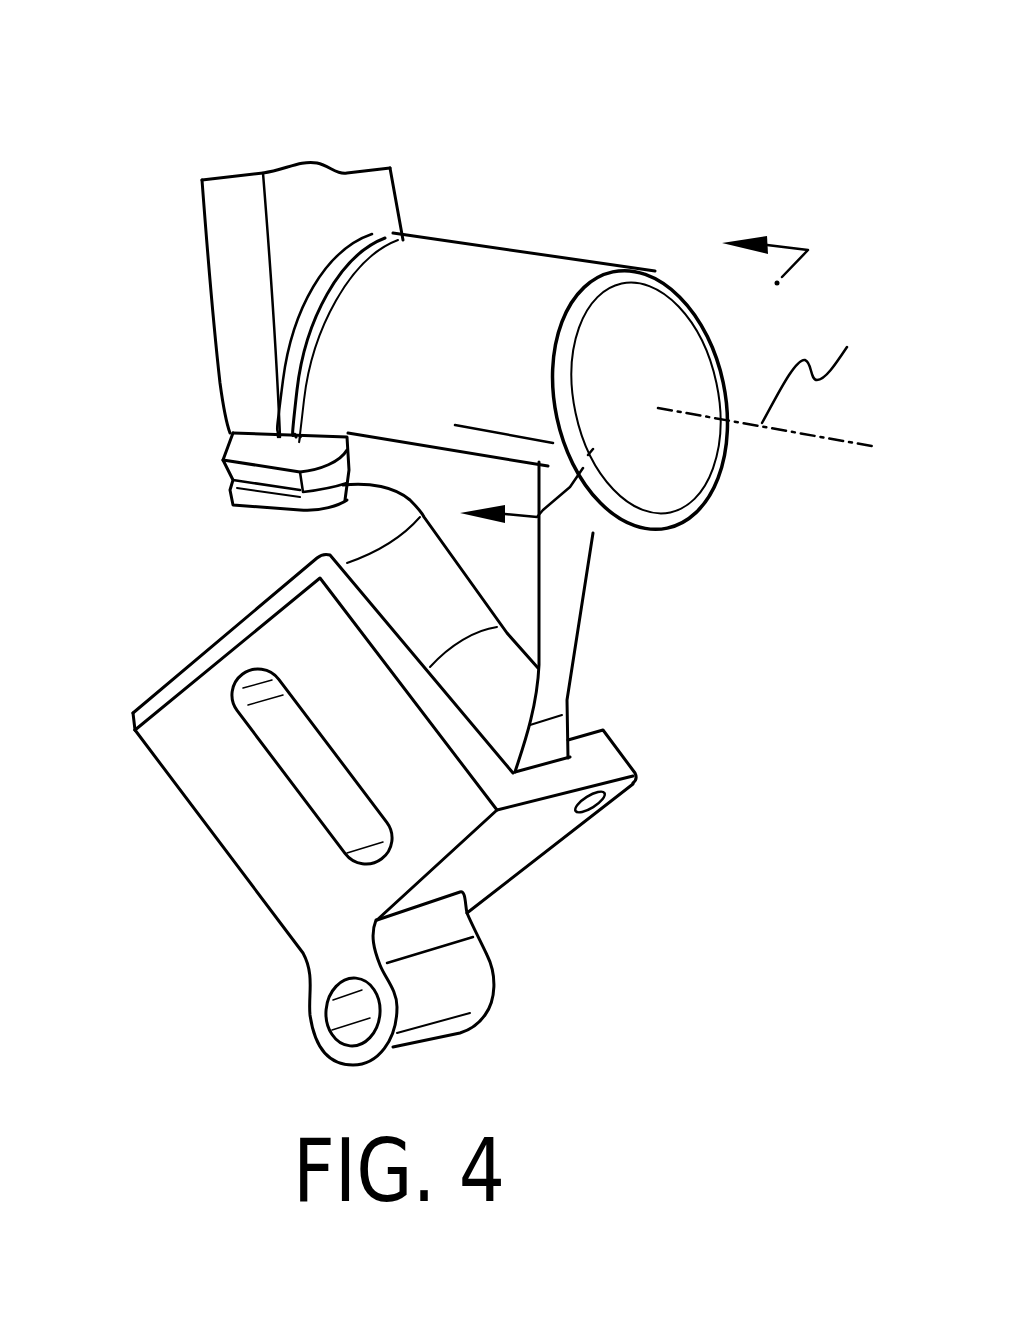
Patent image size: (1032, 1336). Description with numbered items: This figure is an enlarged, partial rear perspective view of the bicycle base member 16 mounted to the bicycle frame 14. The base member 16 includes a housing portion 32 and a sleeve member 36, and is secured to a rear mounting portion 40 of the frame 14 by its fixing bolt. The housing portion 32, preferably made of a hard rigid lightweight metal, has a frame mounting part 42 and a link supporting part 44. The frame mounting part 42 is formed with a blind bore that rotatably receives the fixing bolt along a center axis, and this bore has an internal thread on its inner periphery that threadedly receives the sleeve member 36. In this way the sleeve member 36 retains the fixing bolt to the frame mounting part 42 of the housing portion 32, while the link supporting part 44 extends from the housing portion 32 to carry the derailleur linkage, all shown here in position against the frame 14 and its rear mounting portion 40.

The frame 14 is at (273, 170).
The base member 16 is at (620, 200).
The housing portion 32 is at (470, 232).
The sleeve member 36 is at (360, 232).
The rear mounting portion 40 is at (212, 267).
The frame mounting part 42 is at (630, 523).
The link supporting part 44 is at (523, 848).